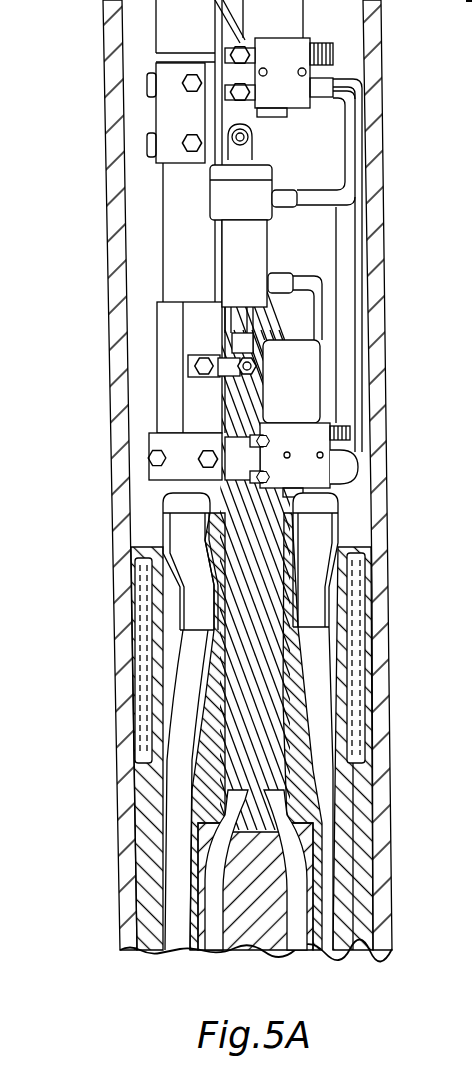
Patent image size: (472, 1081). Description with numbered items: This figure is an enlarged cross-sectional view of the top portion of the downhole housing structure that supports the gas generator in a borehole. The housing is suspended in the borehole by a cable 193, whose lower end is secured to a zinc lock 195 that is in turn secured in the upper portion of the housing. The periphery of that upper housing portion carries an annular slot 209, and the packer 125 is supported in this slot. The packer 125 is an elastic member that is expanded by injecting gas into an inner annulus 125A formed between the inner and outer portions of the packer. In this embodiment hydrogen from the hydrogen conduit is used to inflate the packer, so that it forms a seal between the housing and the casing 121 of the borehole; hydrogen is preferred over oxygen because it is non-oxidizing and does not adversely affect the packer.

The casing 121 is at (390, 803).
The packer 125 is at (133, 614).
The inner annulus 125A is at (372, 612).
The cable 193 is at (254, 645).
The zinc lock 195 is at (261, 897).
The annular slot 209 is at (363, 706).